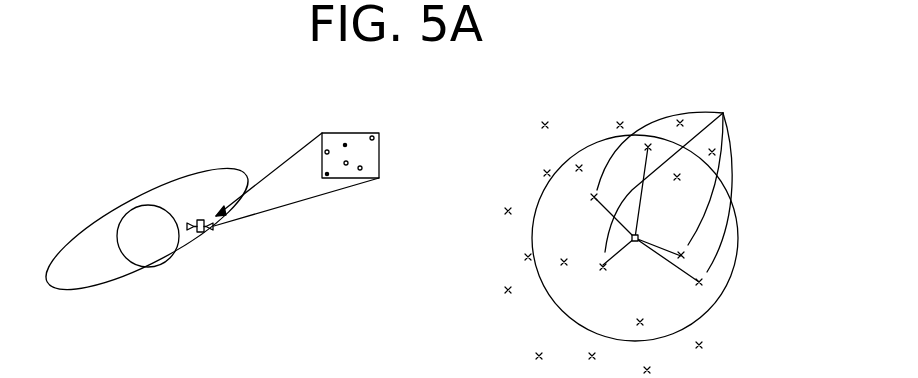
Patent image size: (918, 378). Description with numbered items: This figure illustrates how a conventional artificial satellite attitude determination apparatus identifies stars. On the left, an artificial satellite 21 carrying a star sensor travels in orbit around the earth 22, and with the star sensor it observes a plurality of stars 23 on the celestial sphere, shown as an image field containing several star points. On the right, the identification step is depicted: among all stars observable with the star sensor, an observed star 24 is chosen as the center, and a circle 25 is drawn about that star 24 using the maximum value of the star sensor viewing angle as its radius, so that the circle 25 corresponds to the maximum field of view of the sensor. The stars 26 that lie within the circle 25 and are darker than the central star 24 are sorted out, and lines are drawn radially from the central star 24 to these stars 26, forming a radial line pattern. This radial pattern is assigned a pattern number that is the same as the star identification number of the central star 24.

The artificial satellite 21 is at (202, 237).
The earth 22 is at (146, 210).
The stars 23 is at (353, 138).
The observed star 24 is at (639, 236).
The circle 25 is at (741, 222).
The stars within the circle 26 is at (675, 177).